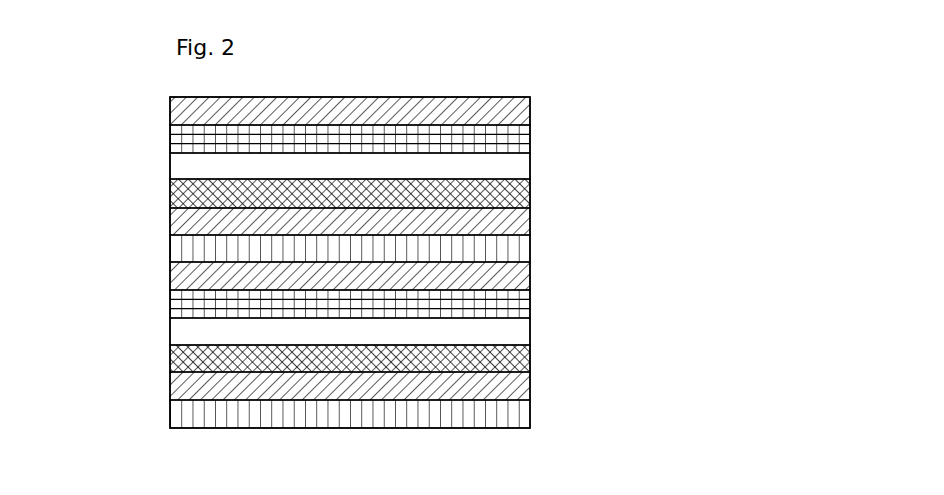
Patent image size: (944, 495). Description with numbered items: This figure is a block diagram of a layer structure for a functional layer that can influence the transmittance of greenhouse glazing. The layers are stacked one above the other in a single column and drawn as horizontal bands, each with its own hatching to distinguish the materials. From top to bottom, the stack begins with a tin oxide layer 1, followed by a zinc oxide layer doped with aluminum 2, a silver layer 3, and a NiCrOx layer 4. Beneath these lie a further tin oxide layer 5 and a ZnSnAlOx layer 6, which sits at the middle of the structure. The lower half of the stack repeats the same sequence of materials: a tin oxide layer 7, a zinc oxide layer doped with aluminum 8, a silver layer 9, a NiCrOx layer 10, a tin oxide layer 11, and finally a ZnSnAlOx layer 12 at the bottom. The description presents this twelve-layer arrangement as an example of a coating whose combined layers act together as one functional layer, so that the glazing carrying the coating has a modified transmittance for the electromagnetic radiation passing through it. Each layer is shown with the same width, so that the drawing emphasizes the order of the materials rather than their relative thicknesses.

The tin oxide layer 1 is at (518, 108).
The zinc oxide layer doped with aluminum 2 is at (180, 142).
The silver layer 3 is at (522, 168).
The NiCrOx layer 4 is at (175, 197).
The tin oxide layer 5 is at (518, 227).
The ZnSnAlOx layer 6 is at (187, 245).
The tin oxide layer 7 is at (527, 278).
The zinc oxide layer doped with aluminum 8 is at (178, 306).
The silver layer 9 is at (518, 328).
The NiCrOx layer 10 is at (178, 357).
The tin oxide layer 11 is at (518, 387).
The ZnSnAlOx layer 12 is at (180, 417).